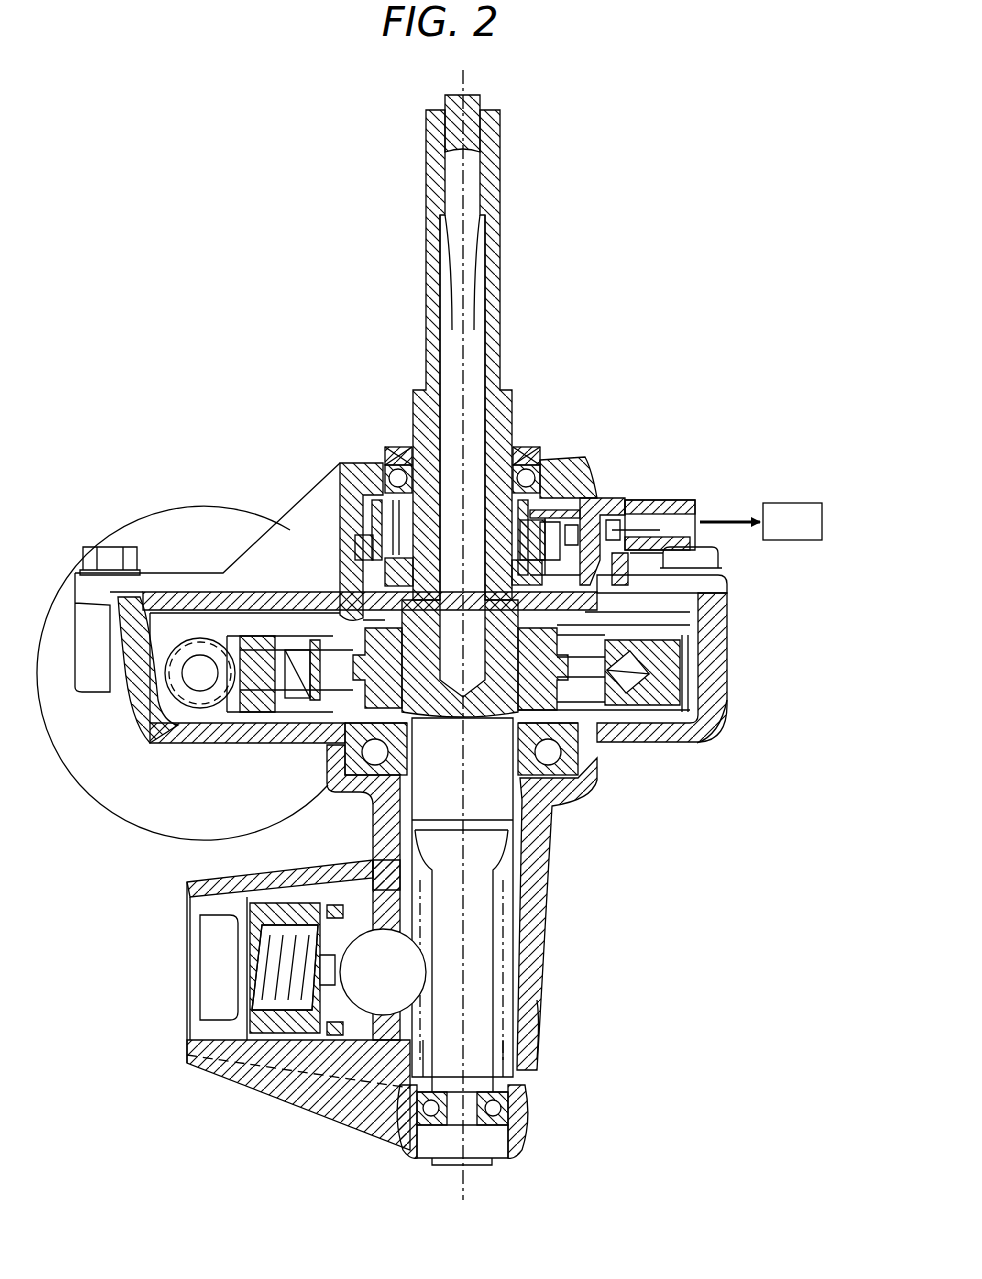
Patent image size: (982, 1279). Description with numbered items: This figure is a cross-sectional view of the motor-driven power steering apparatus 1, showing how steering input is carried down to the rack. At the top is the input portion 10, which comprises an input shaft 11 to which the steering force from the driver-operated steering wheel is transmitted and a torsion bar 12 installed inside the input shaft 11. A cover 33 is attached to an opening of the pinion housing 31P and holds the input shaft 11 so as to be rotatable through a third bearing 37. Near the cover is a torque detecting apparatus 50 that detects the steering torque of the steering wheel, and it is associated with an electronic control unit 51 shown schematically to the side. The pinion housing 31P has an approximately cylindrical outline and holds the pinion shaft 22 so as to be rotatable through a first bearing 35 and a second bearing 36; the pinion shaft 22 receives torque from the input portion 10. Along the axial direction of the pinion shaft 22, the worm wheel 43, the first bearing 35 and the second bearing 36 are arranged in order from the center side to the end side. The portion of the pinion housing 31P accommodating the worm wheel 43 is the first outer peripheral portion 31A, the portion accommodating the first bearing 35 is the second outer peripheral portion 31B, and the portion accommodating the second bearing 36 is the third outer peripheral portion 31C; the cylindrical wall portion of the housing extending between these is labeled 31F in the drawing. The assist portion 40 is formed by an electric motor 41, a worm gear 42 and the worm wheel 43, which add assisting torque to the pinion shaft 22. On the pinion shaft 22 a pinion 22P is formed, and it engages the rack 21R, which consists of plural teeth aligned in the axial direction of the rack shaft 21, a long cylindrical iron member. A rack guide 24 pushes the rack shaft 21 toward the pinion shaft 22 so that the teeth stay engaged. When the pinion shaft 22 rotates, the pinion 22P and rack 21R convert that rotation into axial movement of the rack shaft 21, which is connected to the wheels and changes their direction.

The motor-driven power steering apparatus 1 is at (191, 180).
The input portion 10 is at (338, 132).
The input shaft 11 is at (442, 150).
The torsion bar 12 is at (445, 318).
The third bearing 37 is at (538, 470).
The torque detecting apparatus 50 is at (622, 488).
The electronic control unit (ECU) 51 is at (790, 503).
The cover 33 is at (727, 586).
The pinion housing 31P is at (746, 645).
The first outer peripheral portion 31A is at (720, 706).
The first bearing 35 is at (563, 752).
The second outer peripheral portion 31B is at (592, 792).
The electric motor 41 is at (72, 775).
The worm gear 42 is at (190, 712).
The worm wheel 43 is at (257, 713).
The assist portion 40 is at (163, 870).
The pinion shaft 22 is at (485, 878).
The housing cylindrical portion 31F is at (550, 935).
The pinion 22P is at (500, 990).
The rack guide 24 is at (185, 990).
The rack shaft 21 is at (383, 1000).
The rack 21R is at (388, 1025).
The second bearing 36 is at (497, 1108).
The third outer peripheral portion 31C is at (527, 1120).